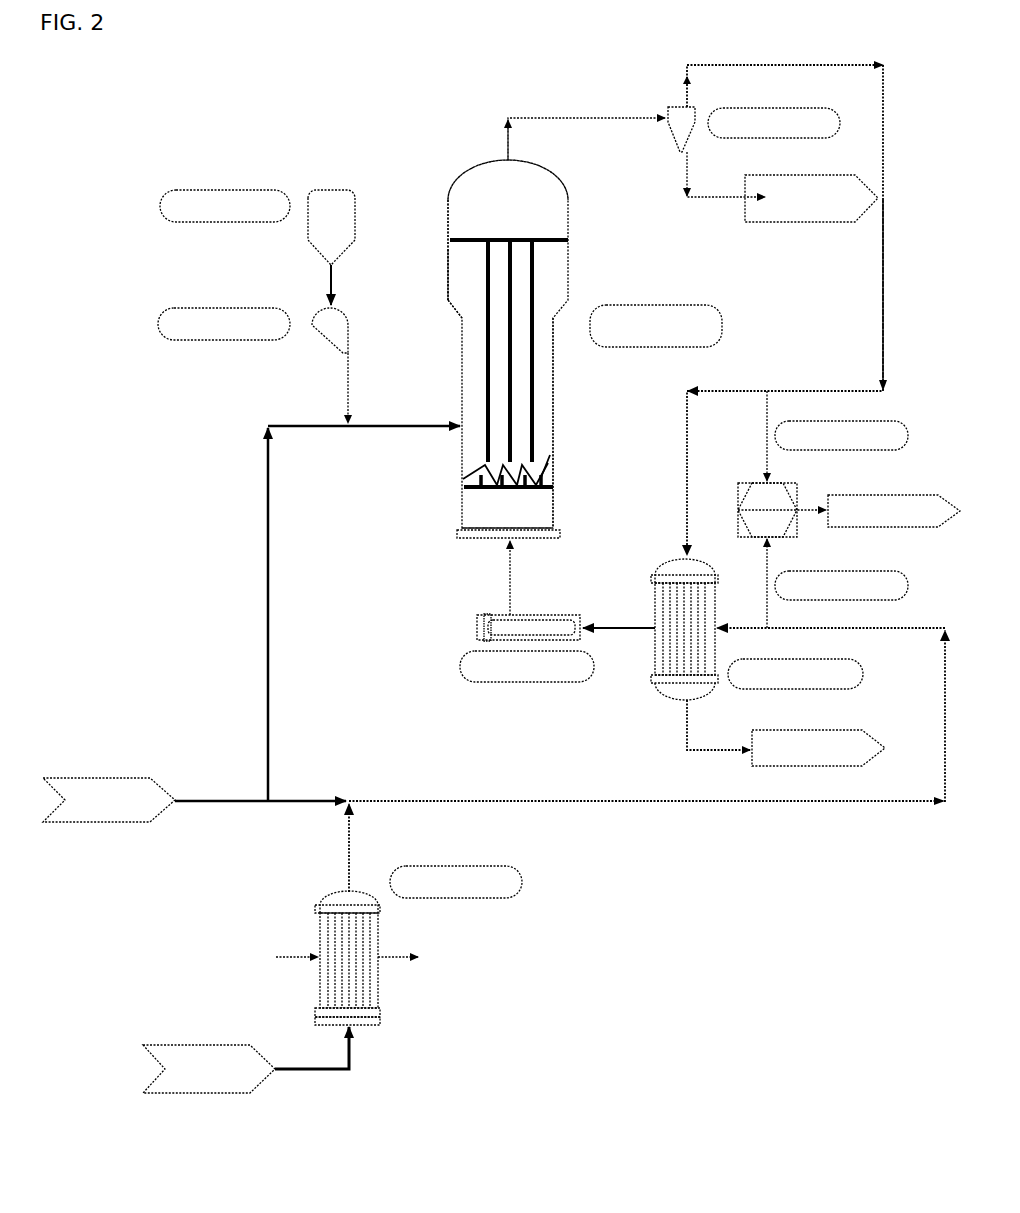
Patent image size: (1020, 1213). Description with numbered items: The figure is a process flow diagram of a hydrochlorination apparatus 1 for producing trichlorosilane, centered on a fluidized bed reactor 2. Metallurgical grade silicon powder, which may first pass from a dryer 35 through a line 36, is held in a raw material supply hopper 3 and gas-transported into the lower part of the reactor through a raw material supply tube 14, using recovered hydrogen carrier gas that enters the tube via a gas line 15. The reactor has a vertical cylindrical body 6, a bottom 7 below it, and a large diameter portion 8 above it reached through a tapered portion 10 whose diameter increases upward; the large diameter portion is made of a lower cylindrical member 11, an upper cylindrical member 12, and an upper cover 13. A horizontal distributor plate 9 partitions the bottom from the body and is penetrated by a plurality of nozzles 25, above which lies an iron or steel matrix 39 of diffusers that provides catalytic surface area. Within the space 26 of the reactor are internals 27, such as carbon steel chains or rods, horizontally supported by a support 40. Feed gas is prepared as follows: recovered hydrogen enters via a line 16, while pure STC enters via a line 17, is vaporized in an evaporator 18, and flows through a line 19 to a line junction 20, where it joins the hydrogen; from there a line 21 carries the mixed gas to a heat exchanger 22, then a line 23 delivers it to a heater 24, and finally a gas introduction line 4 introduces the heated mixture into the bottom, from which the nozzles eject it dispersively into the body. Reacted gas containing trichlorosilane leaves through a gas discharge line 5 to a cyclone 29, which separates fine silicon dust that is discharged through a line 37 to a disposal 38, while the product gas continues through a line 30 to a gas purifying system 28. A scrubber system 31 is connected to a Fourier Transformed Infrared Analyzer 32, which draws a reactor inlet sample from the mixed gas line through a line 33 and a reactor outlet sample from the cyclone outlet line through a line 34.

The apparatus 1 is at (370, 88).
The reactor 2 is at (606, 264).
The raw material supply hopper 3 is at (311, 308).
The gas introduction line 4 is at (505, 584).
The gas discharge line 5 is at (573, 113).
The body 6 is at (558, 412).
The bottom 7 is at (558, 510).
The large diameter portion 8 is at (446, 237).
The distributor plate 9 is at (455, 486).
The tapered portion 10 is at (452, 317).
The lower cylindrical member 11 is at (447, 265).
The upper cylindrical member 12 is at (446, 208).
The upper cover 13 is at (557, 166).
The raw material supply tube 14 is at (378, 431).
The gas line 15 is at (265, 510).
The line 16 is at (230, 798).
The line 17 is at (340, 1076).
The evaporator 18 is at (381, 983).
The line 19 is at (342, 845).
The line junction 20 is at (348, 794).
The line 21 is at (656, 810).
The heat exchanger 22 is at (662, 698).
The line 23 is at (636, 626).
The heater 24 is at (476, 617).
The nozzles 25 is at (549, 475).
The space 26 is at (476, 192).
The internals 27 is at (488, 232).
The gas purifying system 28 is at (845, 733).
The cyclone 29 is at (672, 104).
The line 30 is at (893, 292).
The scrubber system 31 is at (891, 496).
The Fourier Transformed Infrared Analyzer 32 is at (734, 507).
The line 33 is at (771, 565).
The line 34 is at (765, 451).
The dryer 35 is at (330, 191).
The line 36 is at (325, 278).
The line 37 is at (684, 166).
The disposal 38 is at (818, 223).
The matrix 39 is at (548, 461).
The support 40 is at (553, 237).